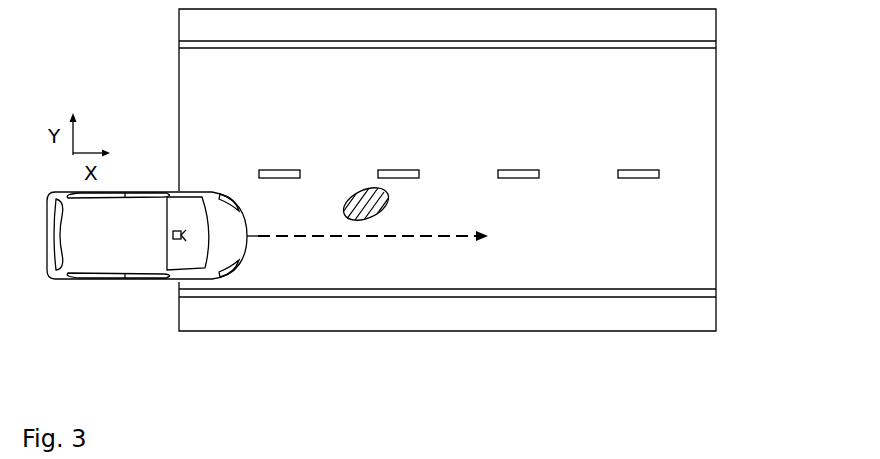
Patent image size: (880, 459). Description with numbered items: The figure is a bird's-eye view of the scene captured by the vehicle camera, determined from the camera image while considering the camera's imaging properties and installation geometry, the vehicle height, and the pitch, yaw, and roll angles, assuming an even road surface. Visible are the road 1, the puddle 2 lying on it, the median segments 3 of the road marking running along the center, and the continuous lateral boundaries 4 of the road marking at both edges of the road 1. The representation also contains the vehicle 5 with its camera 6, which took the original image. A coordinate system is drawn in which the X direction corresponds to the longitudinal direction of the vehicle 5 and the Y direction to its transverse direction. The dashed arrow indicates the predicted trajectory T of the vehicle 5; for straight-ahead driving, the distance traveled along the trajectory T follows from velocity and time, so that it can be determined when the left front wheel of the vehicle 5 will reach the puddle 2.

The road 1 is at (646, 272).
The puddle 2 is at (364, 190).
The median segments 3 is at (259, 173).
The continuous lateral boundaries 4 is at (191, 44).
The vehicle 5 is at (66, 290).
The camera 6 is at (176, 240).
The predicted trajectory T is at (463, 238).